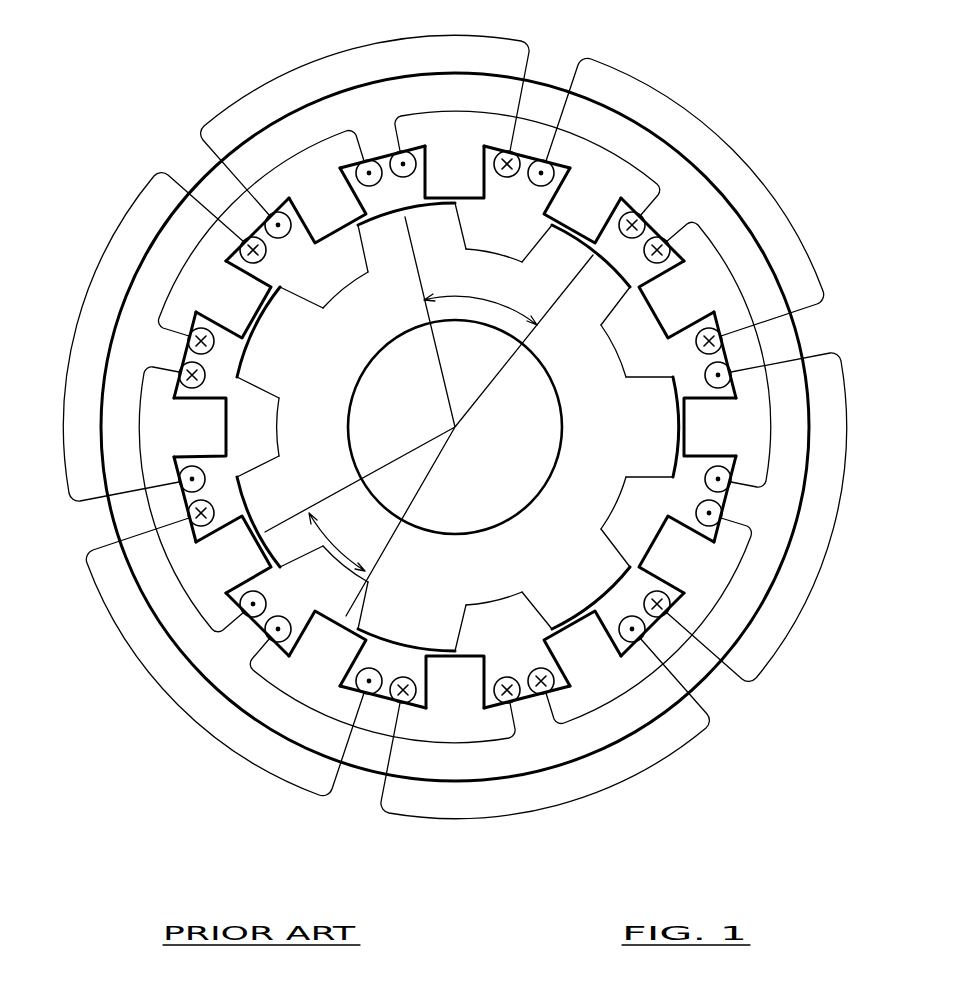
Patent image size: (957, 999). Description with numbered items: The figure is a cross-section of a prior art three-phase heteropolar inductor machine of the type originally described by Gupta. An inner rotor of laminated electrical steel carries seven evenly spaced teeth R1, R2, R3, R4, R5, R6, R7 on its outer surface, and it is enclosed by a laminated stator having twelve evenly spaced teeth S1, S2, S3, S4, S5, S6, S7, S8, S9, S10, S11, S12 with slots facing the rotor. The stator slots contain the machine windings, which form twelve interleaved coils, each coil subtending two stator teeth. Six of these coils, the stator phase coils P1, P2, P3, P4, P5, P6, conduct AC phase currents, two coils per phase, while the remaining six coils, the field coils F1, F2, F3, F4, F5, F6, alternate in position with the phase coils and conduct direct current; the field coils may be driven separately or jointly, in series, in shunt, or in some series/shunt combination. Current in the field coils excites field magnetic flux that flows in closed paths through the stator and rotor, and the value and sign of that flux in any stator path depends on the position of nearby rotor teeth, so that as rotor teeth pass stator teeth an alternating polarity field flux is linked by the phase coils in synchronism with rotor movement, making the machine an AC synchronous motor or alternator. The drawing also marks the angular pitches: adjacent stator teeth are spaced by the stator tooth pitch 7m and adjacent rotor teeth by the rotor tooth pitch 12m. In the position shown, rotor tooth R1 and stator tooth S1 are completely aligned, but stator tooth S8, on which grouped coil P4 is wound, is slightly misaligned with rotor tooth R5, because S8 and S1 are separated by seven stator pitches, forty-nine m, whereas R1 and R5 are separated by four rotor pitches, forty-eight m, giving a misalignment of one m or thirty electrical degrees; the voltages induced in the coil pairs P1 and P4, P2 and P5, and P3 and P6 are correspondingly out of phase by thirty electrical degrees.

The stator tooth S1 is at (710, 427).
The stator tooth S2 is at (676, 554).
The stator tooth S3 is at (582, 648).
The stator tooth S4 is at (455, 682).
The stator tooth S5 is at (327, 648).
The stator tooth S6 is at (233, 554).
The stator tooth S7 is at (200, 427).
The stator tooth S8 is at (233, 299).
The stator tooth S9 is at (327, 205).
The stator tooth S10 is at (454, 172).
The stator tooth S11 is at (582, 205).
The stator tooth S12 is at (676, 299).
The rotor tooth R1 is at (649, 427).
The rotor tooth R2 is at (576, 579).
The rotor tooth R3 is at (412, 616).
The rotor tooth R4 is at (280, 511).
The rotor tooth R5 is at (280, 342).
The rotor tooth R6 is at (412, 237).
The rotor tooth R7 is at (576, 275).
The stator phase coil P1 is at (782, 656).
The stator phase coil P2 is at (560, 812).
The stator phase coil P3 is at (182, 718).
The stator phase coil P4 is at (110, 236).
The stator phase coil P5 is at (362, 44).
The stator phase coil P6 is at (684, 106).
The field coil F1 is at (766, 346).
The field coil F2 is at (672, 668).
The field coil F3 is at (364, 731).
The field coil F4 is at (144, 503).
The field coil F5 is at (235, 193).
The field coil F6 is at (540, 123).
The rotor tooth pitch 12m is at (480, 300).
The stator tooth pitch 7m is at (337, 540).